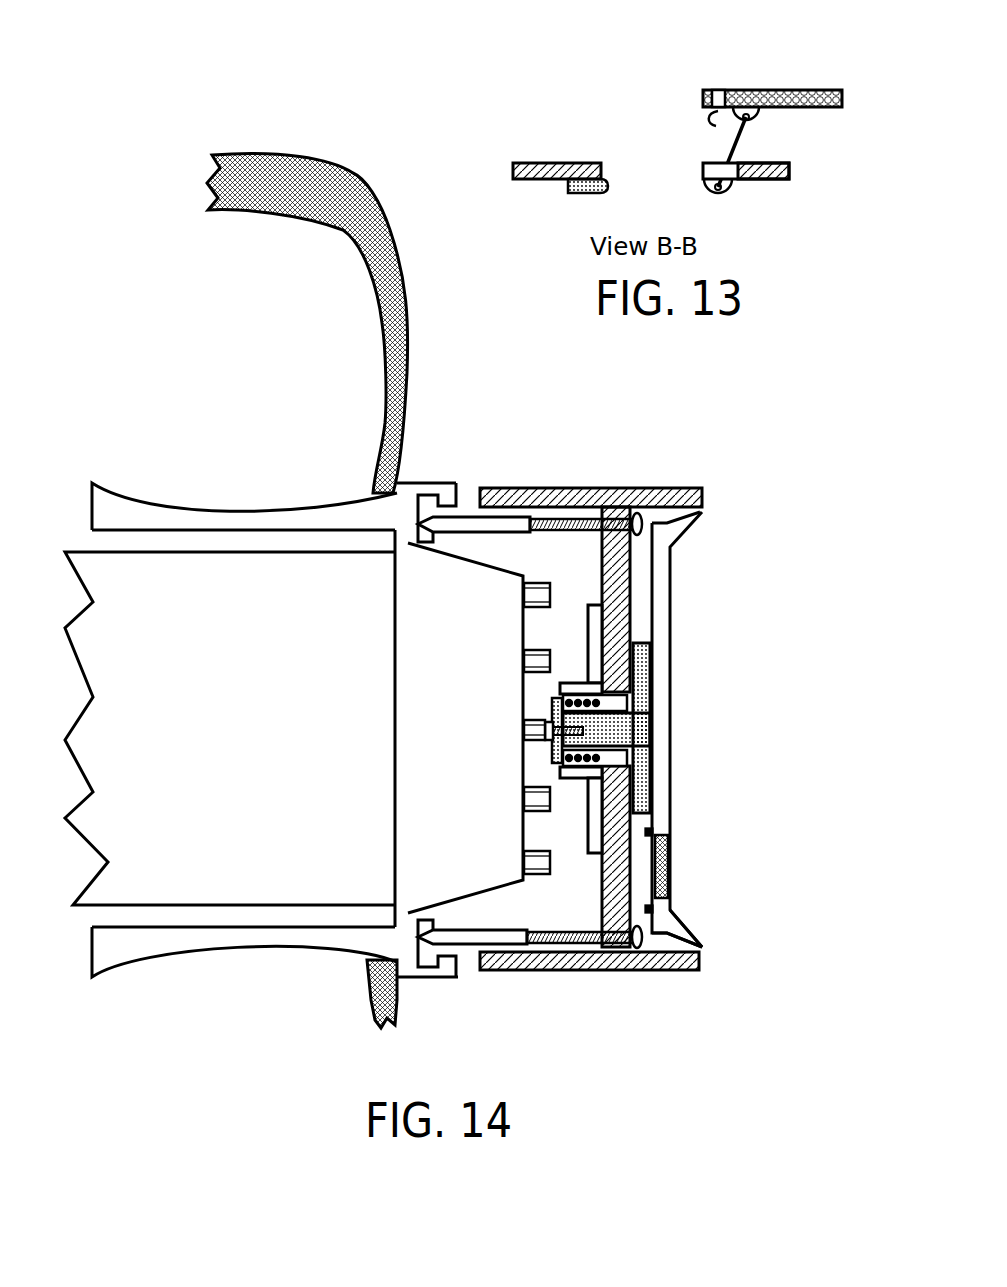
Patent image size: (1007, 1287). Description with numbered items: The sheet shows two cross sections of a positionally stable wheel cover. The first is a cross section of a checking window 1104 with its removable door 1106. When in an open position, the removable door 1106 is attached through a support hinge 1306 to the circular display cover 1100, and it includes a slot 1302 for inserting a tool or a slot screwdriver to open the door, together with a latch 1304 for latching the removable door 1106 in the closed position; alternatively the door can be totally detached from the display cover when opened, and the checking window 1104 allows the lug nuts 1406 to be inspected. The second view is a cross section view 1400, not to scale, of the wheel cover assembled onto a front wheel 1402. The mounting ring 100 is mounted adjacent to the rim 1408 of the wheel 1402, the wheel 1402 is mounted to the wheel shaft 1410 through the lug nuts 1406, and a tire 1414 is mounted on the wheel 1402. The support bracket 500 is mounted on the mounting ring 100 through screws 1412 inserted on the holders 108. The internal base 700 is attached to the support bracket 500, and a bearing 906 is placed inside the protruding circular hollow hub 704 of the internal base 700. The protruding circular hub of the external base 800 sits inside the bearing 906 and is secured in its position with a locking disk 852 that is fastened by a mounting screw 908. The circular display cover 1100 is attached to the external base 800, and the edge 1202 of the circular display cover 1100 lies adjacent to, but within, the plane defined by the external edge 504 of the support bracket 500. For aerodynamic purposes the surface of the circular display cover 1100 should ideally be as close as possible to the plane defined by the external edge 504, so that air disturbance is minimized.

In FIG. 14, the mounting ring 100 is at (430, 977).
In FIG. 14, the holders 108 is at (512, 968).
In FIG. 14, the support bracket 500 is at (655, 488).
In FIG. 14, the external edge 504 is at (702, 963).
In FIG. 14, the internal base 700 is at (598, 622).
In FIG. 14, the protruding circular hollow hub 704 is at (579, 683).
In FIG. 14, the external base 800 is at (646, 645).
In FIG. 14, the locking disk 852 is at (552, 745).
In FIG. 14, the bearing 906 is at (553, 760).
In FIG. 14, the mounting screw 908 is at (524, 730).
In FIG. 14, the circular display cover 1100 is at (672, 723).
In FIG. 13, the checking window 1104 is at (650, 162).
In FIG. 13, the removable door 1106 is at (790, 90).
In FIG. 14, the removable door 1106 is at (672, 873).
In FIG. 14, the edge 1202 is at (698, 928).
In FIG. 13, the slot 1302 is at (717, 90).
In FIG. 13, the latch 1304 is at (708, 116).
In FIG. 13, the support hinge 1306 is at (745, 140).
In FIG. 14, the cross section view 1400 is at (744, 487).
In FIG. 14, the front wheel 1402 is at (343, 533).
In FIG. 14, the lug nuts 1406 is at (523, 661).
In FIG. 14, the rim 1408 is at (430, 483).
In FIG. 14, the wheel shaft 1410 is at (268, 789).
In FIG. 14, the screws 1412 is at (597, 932).
In FIG. 14, the tire 1414 is at (385, 370).